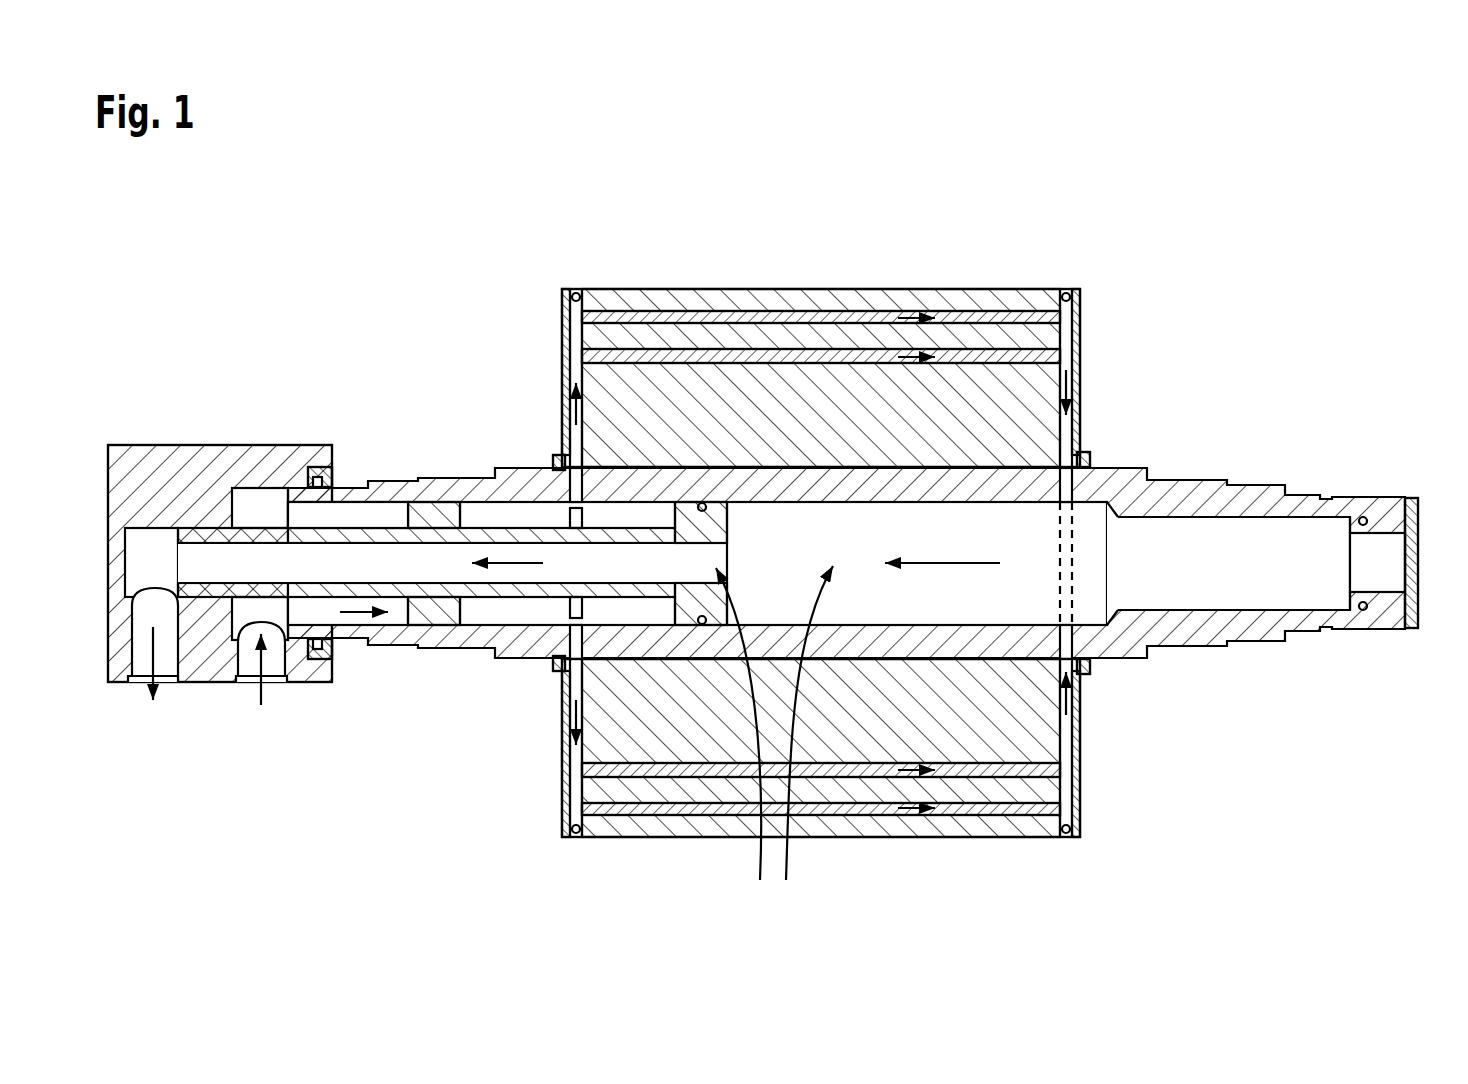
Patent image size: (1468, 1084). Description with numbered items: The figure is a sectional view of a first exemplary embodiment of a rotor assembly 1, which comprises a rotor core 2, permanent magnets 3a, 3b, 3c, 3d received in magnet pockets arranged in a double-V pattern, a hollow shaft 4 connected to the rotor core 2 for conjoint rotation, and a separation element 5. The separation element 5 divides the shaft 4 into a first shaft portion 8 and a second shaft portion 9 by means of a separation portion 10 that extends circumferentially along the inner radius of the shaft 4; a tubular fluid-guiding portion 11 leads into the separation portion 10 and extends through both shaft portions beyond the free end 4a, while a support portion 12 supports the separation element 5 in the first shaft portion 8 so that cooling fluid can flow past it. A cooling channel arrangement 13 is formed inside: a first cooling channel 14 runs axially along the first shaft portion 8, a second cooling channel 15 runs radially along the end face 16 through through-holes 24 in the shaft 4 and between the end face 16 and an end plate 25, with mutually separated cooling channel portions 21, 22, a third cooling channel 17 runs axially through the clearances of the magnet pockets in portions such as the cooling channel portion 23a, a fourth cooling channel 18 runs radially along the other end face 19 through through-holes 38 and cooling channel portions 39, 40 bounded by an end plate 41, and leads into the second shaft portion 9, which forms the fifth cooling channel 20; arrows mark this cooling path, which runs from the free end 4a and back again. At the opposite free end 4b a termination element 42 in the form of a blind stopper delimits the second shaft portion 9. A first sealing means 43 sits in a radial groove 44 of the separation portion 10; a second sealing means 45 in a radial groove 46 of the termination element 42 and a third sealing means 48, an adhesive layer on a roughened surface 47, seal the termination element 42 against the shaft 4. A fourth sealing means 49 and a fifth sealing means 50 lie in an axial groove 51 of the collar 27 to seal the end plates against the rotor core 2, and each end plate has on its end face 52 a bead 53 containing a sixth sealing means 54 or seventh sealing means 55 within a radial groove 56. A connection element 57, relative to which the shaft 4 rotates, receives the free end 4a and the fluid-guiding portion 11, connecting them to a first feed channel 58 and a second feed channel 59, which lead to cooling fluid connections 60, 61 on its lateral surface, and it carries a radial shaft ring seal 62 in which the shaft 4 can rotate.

The rotor assembly 1 is at (1216, 206).
The rotor core 2 is at (934, 300).
The permanent magnet 3a is at (828, 320).
The permanent magnet 3b is at (1003, 815).
The permanent magnet 3c is at (792, 360).
The permanent magnet 3d is at (968, 778).
The shaft 4 is at (1253, 495).
The free end 4a is at (348, 470).
The free end 4b is at (1340, 390).
The separation element 5 is at (437, 513).
The first shaft portion 8 is at (470, 615).
The second shaft portion 9 is at (774, 738).
The separation portion 10 is at (712, 525).
The fluid-guiding portion 11 is at (487, 532).
The support portion 12 is at (423, 482).
The cooling channel arrangement 13 is at (778, 563).
The first cooling channel 14 is at (356, 616).
The second cooling channel 15 is at (578, 450).
The end face 16 is at (565, 775).
The third cooling channel 17 is at (878, 335).
The fourth cooling channel 18 is at (1064, 455).
The end face 19 is at (1066, 745).
The fifth cooling channel 20 is at (945, 566).
The cooling channel portion 21 is at (573, 405).
The cooling channel portion 22 is at (577, 745).
The cooling channel portion 23a is at (1002, 360).
The through-hole 24 is at (553, 468).
The end plate 25 is at (563, 345).
The collar 27 is at (562, 292).
The through-hole 38 is at (1066, 486).
The cooling channel portion 39 is at (1070, 390).
The cooling channel portion 40 is at (1068, 695).
The end plate 41 is at (1076, 790).
The termination element 42 is at (1418, 495).
The first sealing means 43 is at (704, 530).
The radial groove 44 is at (698, 505).
The second sealing means 45 is at (1375, 502).
The radial groove 46 is at (1360, 518).
The surface 47 is at (1392, 502).
The third sealing means 48 is at (1385, 620).
The fourth sealing means 49 is at (600, 292).
The fifth sealing means 50 is at (1066, 292).
The axial groove 51 is at (576, 292).
The end face 52 is at (565, 805).
The bead 53 is at (558, 669).
The sixth sealing means 54 is at (558, 457).
The seventh sealing means 55 is at (1086, 462).
The radial groove 56 is at (570, 695).
The connection element 57 is at (172, 452).
The first feed channel 58 is at (268, 705).
The second feed channel 59 is at (160, 700).
The cooling fluid connection 60 is at (250, 683).
The cooling fluid connection 61 is at (145, 683).
The radial shaft ring seal 62 is at (318, 465).